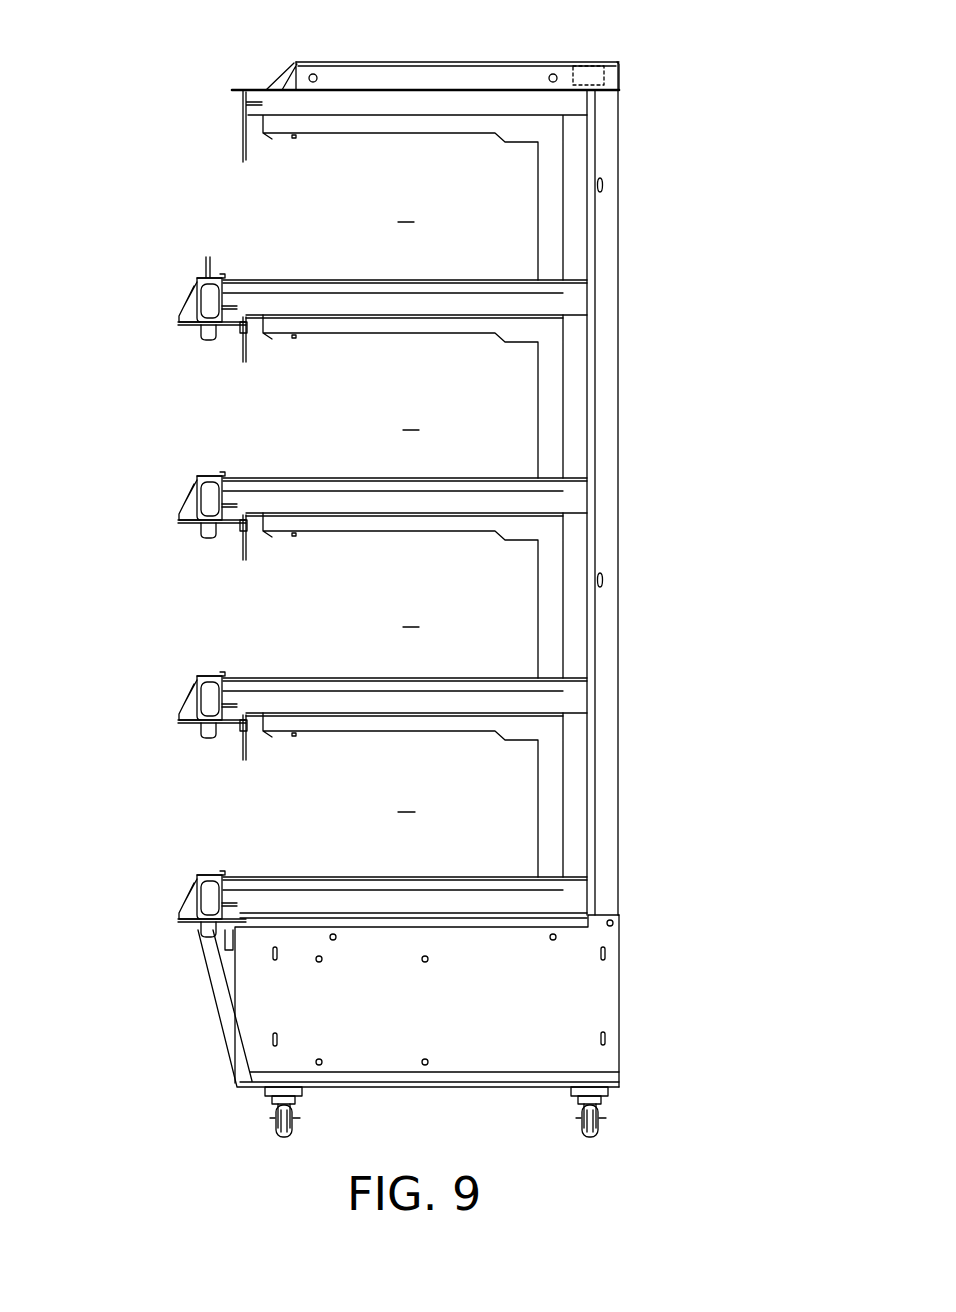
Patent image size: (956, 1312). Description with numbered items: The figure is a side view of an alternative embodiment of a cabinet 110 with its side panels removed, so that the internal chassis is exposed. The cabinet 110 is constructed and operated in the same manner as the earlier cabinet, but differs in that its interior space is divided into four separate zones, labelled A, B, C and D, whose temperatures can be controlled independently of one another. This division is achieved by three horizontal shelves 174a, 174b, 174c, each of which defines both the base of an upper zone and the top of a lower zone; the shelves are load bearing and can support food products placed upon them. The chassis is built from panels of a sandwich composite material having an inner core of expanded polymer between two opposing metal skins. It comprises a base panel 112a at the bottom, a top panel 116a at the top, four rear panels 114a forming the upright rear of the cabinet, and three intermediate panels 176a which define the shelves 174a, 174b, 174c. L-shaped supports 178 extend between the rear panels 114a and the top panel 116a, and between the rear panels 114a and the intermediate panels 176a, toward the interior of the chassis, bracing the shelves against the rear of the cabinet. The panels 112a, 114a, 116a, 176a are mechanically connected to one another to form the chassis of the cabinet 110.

The cabinet 110 is at (694, 86).
The top panel 116a is at (412, 102).
The rear panel 114a is at (577, 209).
The L shaped support 178 is at (553, 132).
The intermediate panel 176a is at (326, 303).
The shelf 174a is at (173, 298).
The shelf 174b is at (173, 498).
The shelf 174c is at (180, 703).
The base panel 112a is at (379, 905).